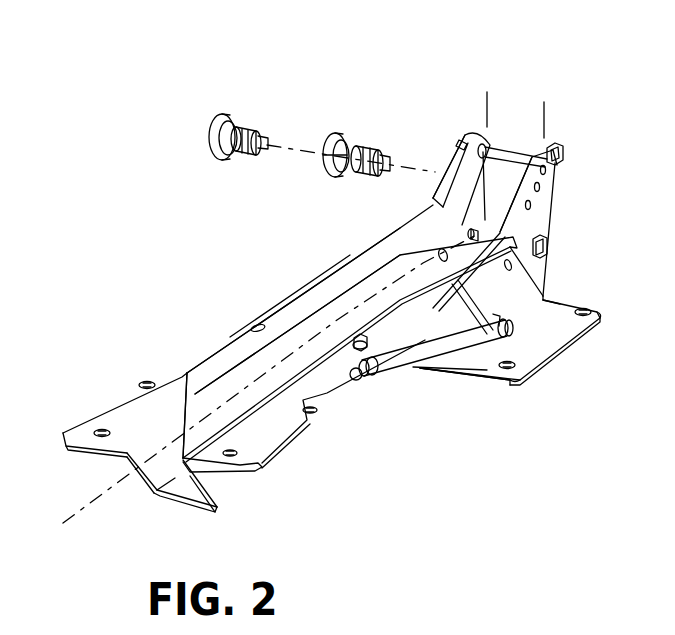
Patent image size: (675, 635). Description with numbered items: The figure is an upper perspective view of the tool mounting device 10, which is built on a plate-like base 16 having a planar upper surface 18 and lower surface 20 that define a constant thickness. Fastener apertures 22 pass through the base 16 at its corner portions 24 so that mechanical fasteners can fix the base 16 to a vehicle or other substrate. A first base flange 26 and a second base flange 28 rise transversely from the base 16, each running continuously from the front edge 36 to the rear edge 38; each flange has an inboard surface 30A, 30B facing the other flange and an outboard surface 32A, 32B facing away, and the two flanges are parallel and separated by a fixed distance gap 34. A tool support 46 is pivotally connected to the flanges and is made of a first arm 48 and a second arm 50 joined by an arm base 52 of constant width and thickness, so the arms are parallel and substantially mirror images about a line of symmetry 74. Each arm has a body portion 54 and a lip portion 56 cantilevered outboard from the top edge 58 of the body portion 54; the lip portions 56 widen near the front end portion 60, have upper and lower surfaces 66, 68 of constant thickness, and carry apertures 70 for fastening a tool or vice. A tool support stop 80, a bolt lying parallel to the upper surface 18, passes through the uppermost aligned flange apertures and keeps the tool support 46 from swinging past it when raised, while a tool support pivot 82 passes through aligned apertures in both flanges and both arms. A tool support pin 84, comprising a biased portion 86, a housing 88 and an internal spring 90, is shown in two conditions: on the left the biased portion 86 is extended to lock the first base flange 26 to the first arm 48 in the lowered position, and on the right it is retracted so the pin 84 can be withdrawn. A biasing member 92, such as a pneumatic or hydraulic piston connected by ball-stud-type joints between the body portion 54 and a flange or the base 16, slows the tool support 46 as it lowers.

The tool mounting device 10 is at (207, 334).
The base 16 is at (573, 337).
The upper surface 18 is at (563, 305).
The lower surface 20 is at (533, 367).
The fastener aperture 22 is at (585, 312).
The corner portion 24 is at (603, 323).
The first base flange 26 is at (548, 213).
The second base flange 28 is at (487, 132).
The inboard surface 30A is at (553, 143).
The inboard surface 30B is at (490, 167).
The outboard surface 32A is at (553, 182).
The outboard surface 32B is at (461, 142).
The fixed distance gap 34 is at (485, 108).
The front edge 36 is at (427, 368).
The rear edge 38 is at (563, 312).
The tool support 46 is at (163, 361).
The first arm 48 is at (218, 480).
The second arm 50 is at (132, 467).
The arm base 52 is at (183, 508).
The body portion 54 is at (298, 343).
The lip portion 56 is at (305, 287).
The top edge 58 is at (181, 417).
The front end portion 60 is at (217, 507).
The upper surface 66 is at (440, 290).
The lower surface 68 is at (72, 447).
The aperture 70 is at (106, 430).
The line of symmetry 74 is at (63, 523).
The tool support stop 80 is at (563, 153).
The tool support pivot 82 is at (547, 247).
The tool support pin 84 is at (237, 123).
The biased portion 86 is at (267, 137).
The housing 88 is at (255, 128).
The spring 90 is at (372, 145).
The biasing member 92 is at (497, 338).